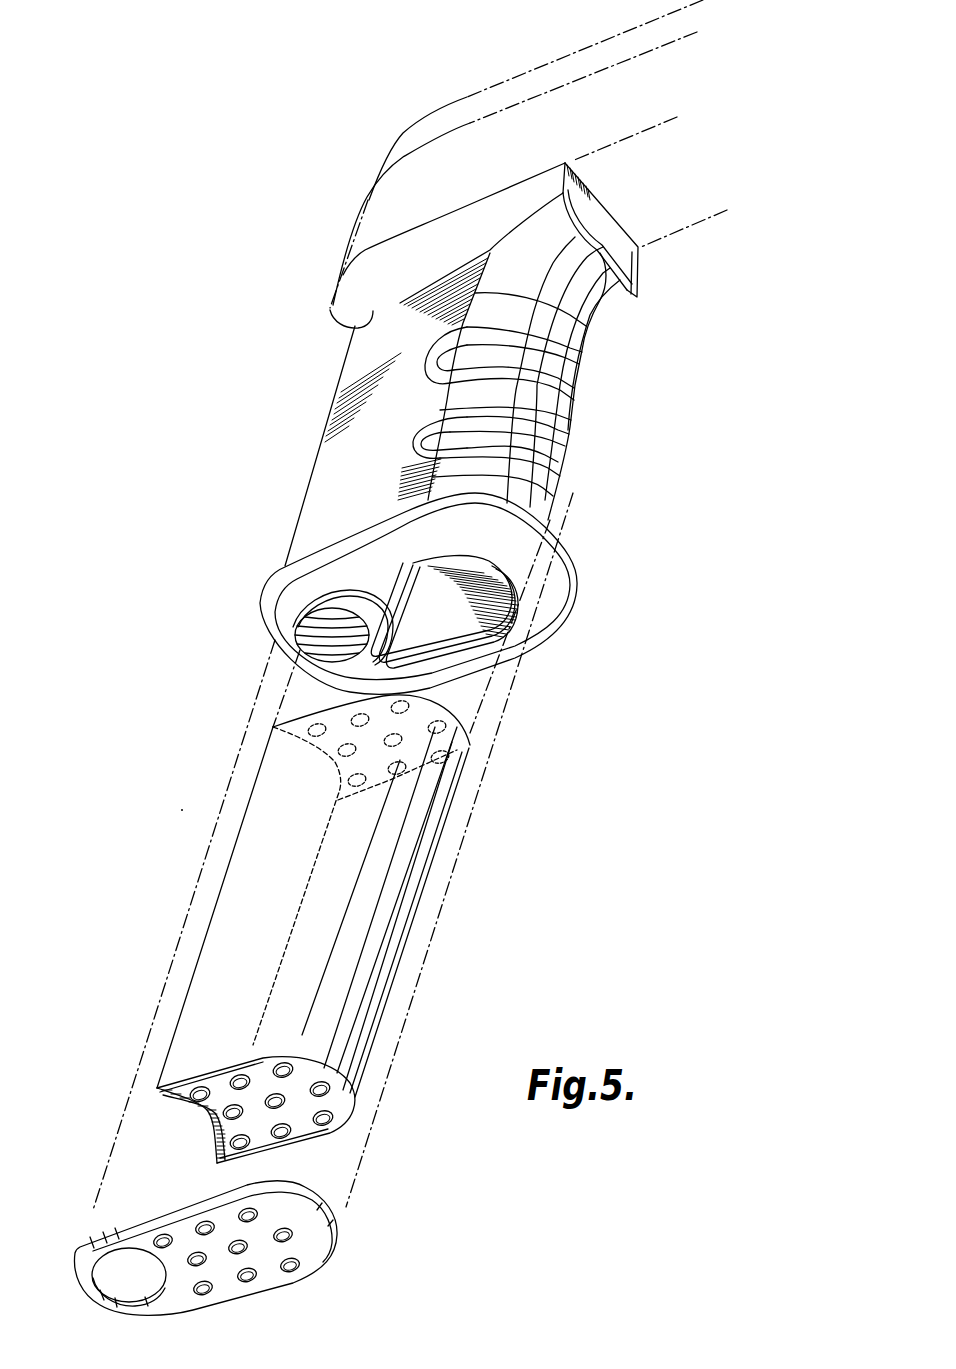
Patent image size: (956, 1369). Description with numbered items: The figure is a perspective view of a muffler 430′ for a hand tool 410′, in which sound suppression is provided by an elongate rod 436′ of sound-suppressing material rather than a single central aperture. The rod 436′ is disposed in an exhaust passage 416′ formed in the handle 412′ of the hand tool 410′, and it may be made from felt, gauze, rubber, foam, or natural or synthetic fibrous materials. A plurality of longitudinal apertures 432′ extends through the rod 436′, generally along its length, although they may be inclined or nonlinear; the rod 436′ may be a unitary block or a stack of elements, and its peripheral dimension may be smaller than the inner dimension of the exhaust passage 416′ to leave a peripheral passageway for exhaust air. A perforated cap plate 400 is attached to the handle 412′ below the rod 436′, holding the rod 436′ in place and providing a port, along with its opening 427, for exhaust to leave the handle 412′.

The hand tool 410′ is at (352, 221).
The handle 412′ is at (325, 485).
The exhaust passage 416′ is at (517, 615).
The muffler 430′ is at (503, 826).
The elongate rod 436′ is at (393, 915).
The longitudinal apertures 432′ is at (227, 1083).
The opening 427 is at (107, 1260).
The perforated cap plate 400 is at (214, 1246).